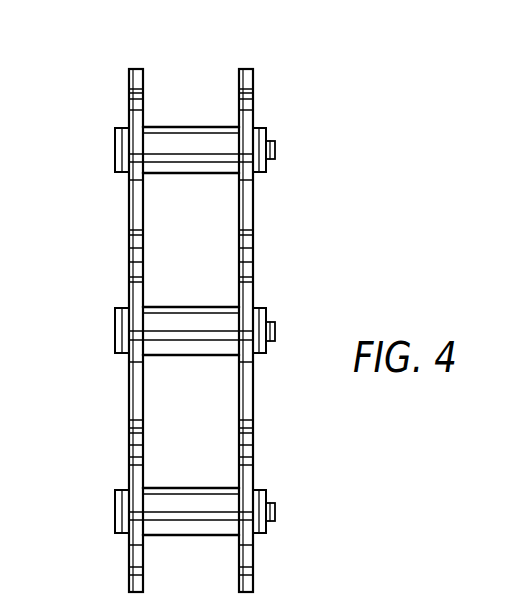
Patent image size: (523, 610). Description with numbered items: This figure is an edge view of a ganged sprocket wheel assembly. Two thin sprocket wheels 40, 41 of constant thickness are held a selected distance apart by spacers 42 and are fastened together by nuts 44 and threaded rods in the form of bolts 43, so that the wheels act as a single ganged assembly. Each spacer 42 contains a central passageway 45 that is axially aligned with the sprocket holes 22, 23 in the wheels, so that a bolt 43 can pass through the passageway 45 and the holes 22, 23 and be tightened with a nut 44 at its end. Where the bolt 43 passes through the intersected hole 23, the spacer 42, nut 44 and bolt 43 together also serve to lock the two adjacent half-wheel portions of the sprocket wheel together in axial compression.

The sprocket wheel 40 is at (249, 68).
The sprocket wheel 41 is at (132, 67).
The spacer 42 is at (205, 173).
The bolt 43 is at (276, 151).
The nut 44 is at (267, 131).
The central passageway 45 is at (253, 303).
The sprocket hole 22 is at (125, 173).
The intersected hole 23 is at (127, 350).